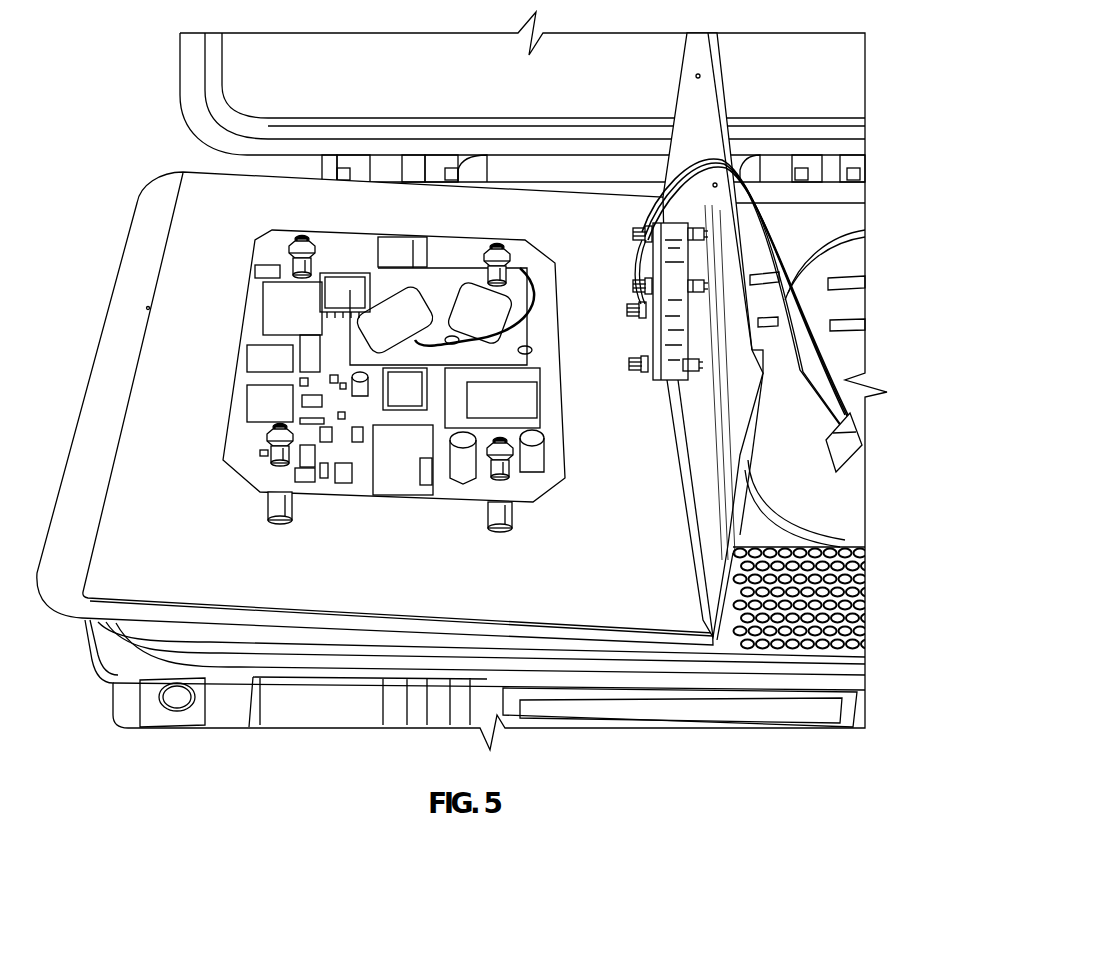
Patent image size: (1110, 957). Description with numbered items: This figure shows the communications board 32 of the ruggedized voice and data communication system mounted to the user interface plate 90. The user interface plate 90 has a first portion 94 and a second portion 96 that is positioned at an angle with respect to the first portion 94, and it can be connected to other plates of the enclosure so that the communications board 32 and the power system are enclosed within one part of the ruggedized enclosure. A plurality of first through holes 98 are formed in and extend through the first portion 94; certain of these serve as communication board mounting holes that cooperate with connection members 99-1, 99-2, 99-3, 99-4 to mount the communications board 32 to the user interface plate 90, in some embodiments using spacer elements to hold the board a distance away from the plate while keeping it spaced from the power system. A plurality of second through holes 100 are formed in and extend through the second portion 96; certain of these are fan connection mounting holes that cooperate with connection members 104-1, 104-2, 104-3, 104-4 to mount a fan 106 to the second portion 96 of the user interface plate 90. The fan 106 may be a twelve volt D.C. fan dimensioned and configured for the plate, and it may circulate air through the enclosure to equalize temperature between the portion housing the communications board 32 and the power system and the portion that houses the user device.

The communications board 32 is at (390, 377).
The user interface plate 90 is at (150, 382).
The first portion 94 is at (138, 222).
The second portion 96 is at (698, 77).
The first through holes 98 is at (148, 308).
The connection member 99-1 is at (302, 237).
The connection member 99-2 is at (500, 243).
The connection member 99-3 is at (507, 447).
The connection member 99-4 is at (273, 430).
The second through holes 100 is at (690, 173).
The connection member 104-1 is at (628, 363).
The connection member 104-2 is at (625, 307).
The connection member 104-3 is at (640, 233).
The connection member 104-4 is at (637, 287).
The fan 106 is at (696, 310).